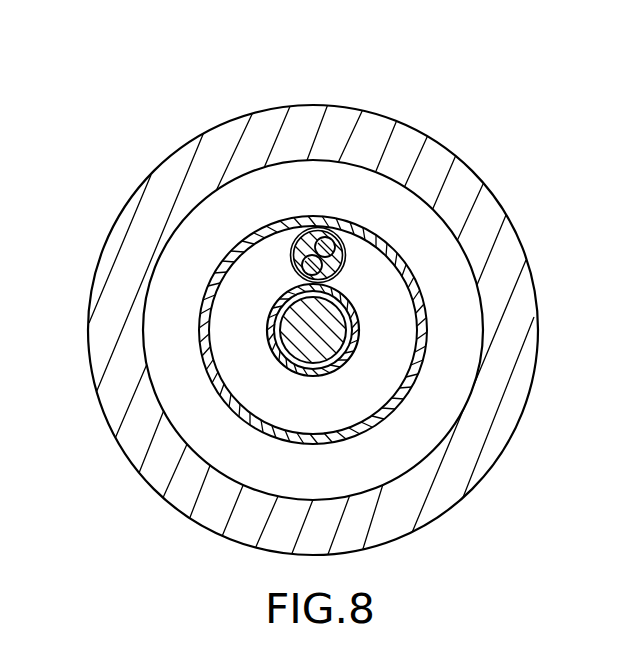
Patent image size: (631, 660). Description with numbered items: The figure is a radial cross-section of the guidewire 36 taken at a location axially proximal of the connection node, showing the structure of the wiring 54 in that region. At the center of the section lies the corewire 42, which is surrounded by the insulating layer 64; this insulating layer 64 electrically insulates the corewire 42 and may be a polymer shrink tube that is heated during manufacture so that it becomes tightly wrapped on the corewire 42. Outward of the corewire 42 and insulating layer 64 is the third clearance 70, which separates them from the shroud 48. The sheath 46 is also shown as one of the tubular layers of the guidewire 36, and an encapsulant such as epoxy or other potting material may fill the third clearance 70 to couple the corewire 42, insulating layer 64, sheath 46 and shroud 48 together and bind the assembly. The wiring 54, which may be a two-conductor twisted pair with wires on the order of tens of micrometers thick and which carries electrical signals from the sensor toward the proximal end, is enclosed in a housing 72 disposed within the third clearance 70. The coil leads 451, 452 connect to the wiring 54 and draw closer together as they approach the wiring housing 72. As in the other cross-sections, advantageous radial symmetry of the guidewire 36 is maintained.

The guidewire 36 is at (499, 126).
The corewire 42 is at (292, 330).
The coil lead 451 is at (328, 247).
The coil lead 452 is at (318, 263).
The sheath 46 is at (393, 250).
The shroud 48 is at (387, 143).
The wiring 54 is at (268, 262).
The insulating layer 64 is at (358, 321).
The third clearance 70 is at (440, 382).
The housing 72 is at (315, 238).